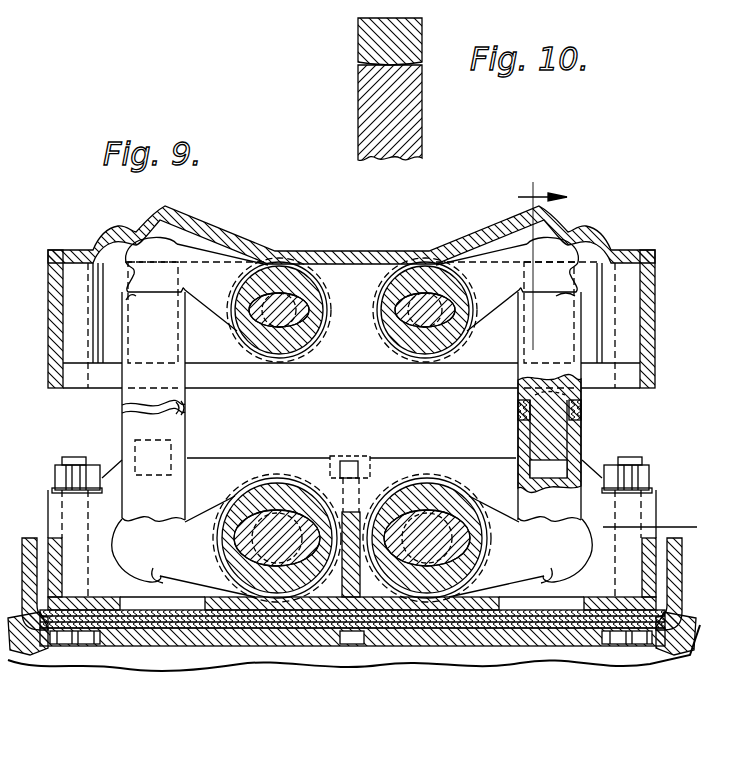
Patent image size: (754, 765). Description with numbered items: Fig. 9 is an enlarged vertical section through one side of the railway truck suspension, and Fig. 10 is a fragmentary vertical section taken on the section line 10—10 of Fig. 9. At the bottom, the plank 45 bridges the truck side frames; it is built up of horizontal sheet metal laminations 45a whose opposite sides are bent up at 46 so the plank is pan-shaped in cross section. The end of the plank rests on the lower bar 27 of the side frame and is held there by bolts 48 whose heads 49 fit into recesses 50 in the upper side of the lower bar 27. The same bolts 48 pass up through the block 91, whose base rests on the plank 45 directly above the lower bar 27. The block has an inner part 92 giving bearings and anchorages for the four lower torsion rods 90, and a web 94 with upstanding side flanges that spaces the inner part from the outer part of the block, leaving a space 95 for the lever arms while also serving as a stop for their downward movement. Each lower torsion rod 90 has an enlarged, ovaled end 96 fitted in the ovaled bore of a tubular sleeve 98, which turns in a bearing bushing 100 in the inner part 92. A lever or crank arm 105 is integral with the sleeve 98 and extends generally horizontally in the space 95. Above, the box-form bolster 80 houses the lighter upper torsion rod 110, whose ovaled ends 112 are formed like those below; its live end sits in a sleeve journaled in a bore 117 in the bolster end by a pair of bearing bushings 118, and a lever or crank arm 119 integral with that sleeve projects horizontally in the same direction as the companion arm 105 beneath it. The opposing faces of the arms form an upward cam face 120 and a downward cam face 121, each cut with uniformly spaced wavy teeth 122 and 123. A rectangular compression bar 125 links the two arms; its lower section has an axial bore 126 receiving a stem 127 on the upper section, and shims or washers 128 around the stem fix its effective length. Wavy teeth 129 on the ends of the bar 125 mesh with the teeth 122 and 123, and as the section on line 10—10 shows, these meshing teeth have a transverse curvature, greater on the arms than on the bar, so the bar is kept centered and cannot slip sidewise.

In FIG. 9, the section line / clamp assembly 10 is at (507, 350).
In FIG. 9, the lower bars 27 is at (397, 647).
In FIG. 9, the plank 45 is at (227, 632).
In FIG. 9, the sheet metal laminations 45a is at (188, 618).
In FIG. 9, the bent-up sides 46 is at (38, 572).
In FIG. 9, the bolts 48 is at (78, 456).
In FIG. 9, the heads 49 is at (60, 647).
In FIG. 9, the recesses 50 is at (90, 647).
In FIG. 9, the bolster 80 is at (364, 250).
In FIG. 9, the lower torsion rods 90 is at (257, 478).
In FIG. 9, the block 91 is at (391, 447).
In FIG. 9, the inner part 92 is at (202, 462).
In FIG. 9, the web 94 is at (63, 576).
In FIG. 9, the space 95 is at (662, 529).
In FIG. 9, the end 96 is at (290, 510).
In FIG. 9, the tubular sleeve 98 is at (262, 508).
In FIG. 9, the bearing bushing 100 is at (302, 507).
In FIG. 9, the lever or crank arm 105 is at (352, 554).
In FIG. 9, the upper torsion rod 110 is at (376, 284).
In FIG. 9, the ends 112 is at (380, 310).
In FIG. 9, the bore 117 is at (378, 332).
In FIG. 9, the bearing bushings 118 is at (408, 340).
In FIG. 10, the lever or crank arm 119 is at (360, 29).
In FIG. 9, the lever or crank arm 119 is at (352, 287).
In FIG. 9, the cam face 120 is at (234, 510).
In FIG. 9, the cam face 121 is at (658, 288).
In FIG. 9, the wavy teeth 122 is at (352, 550).
In FIG. 9, the wavy teeth 123 is at (352, 264).
In FIG. 10, the compression bar 125 is at (418, 103).
In FIG. 9, the compression bar 125 is at (351, 391).
In FIG. 9, the axial bore 126 is at (602, 440).
In FIG. 9, the stem 127 is at (546, 437).
In FIG. 9, the shims or washers 128 is at (603, 413).
In FIG. 9, the wavy teeth 129 is at (351, 408).